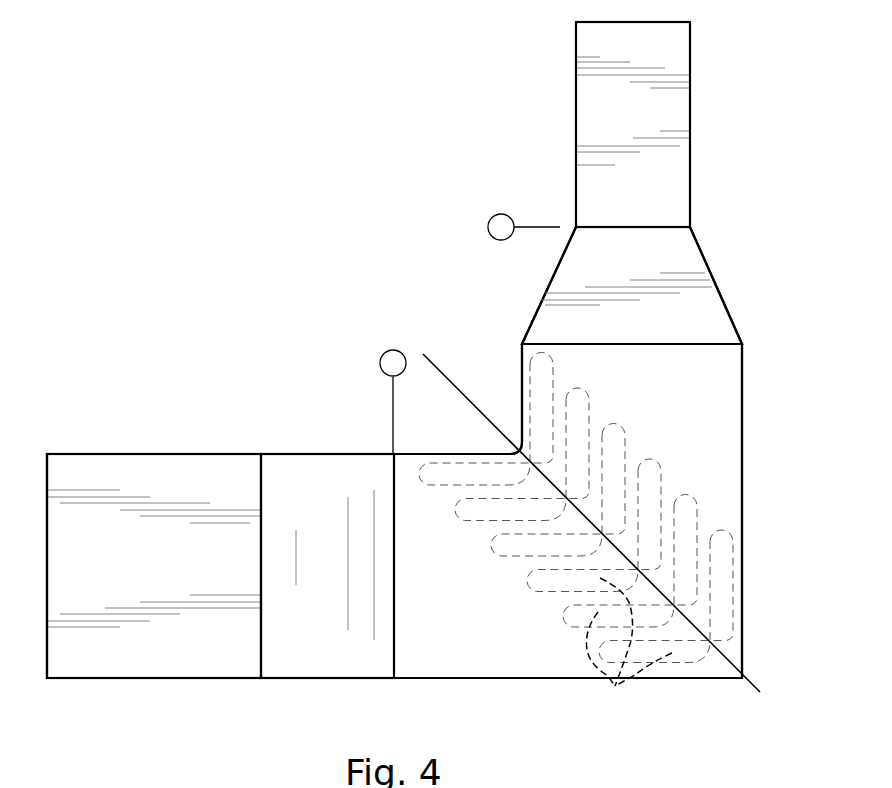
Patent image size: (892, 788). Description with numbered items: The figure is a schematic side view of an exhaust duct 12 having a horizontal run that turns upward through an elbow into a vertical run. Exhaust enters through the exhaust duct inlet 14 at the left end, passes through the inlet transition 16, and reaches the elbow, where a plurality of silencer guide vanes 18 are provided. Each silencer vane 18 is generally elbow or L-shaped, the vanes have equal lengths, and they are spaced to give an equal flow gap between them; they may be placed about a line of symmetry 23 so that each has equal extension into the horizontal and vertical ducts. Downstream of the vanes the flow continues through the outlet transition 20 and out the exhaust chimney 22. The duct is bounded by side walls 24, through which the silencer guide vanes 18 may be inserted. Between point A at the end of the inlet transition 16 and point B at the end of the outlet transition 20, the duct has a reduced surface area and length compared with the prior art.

The exhaust duct 12 is at (222, 192).
The exhaust duct inlet 14 is at (147, 470).
The inlet transition 16 is at (315, 466).
The silencer guide vanes 18 is at (615, 686).
The outlet transition 20 is at (718, 312).
The exhaust chimney 22 is at (668, 118).
The line of symmetry 23 is at (762, 692).
The side walls 24 is at (723, 467).